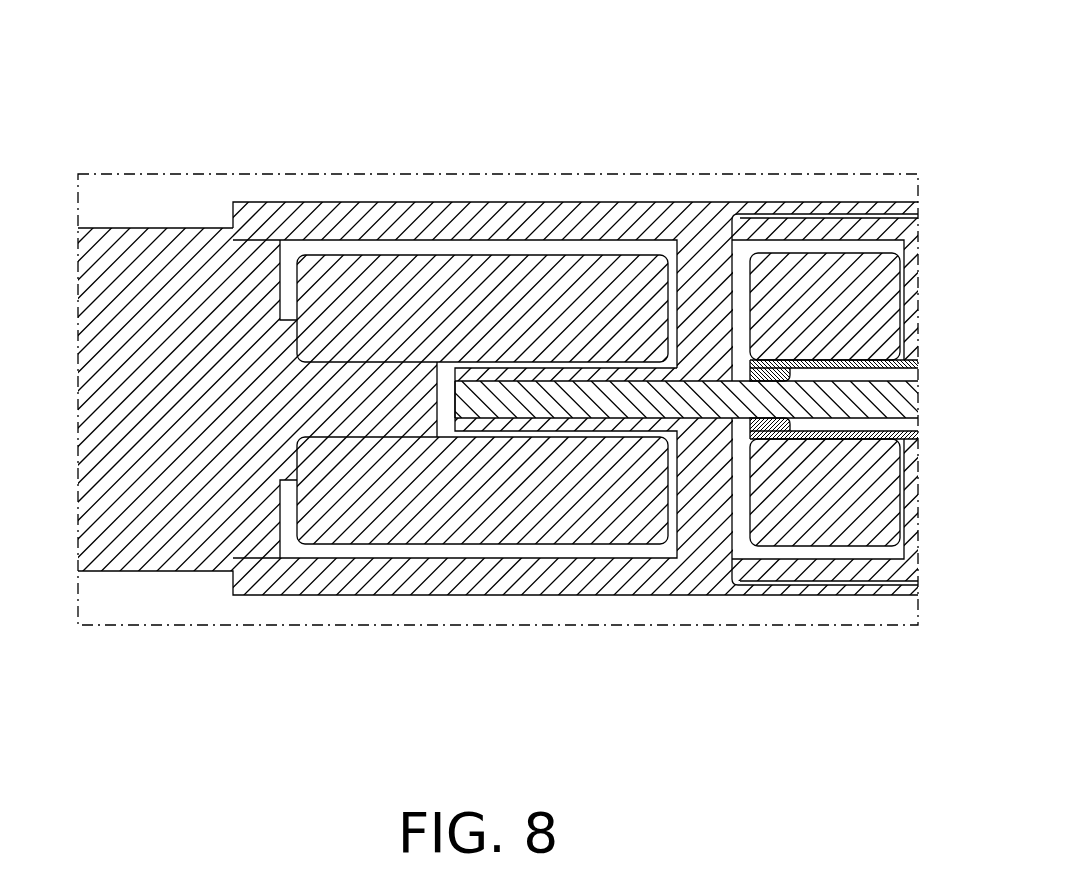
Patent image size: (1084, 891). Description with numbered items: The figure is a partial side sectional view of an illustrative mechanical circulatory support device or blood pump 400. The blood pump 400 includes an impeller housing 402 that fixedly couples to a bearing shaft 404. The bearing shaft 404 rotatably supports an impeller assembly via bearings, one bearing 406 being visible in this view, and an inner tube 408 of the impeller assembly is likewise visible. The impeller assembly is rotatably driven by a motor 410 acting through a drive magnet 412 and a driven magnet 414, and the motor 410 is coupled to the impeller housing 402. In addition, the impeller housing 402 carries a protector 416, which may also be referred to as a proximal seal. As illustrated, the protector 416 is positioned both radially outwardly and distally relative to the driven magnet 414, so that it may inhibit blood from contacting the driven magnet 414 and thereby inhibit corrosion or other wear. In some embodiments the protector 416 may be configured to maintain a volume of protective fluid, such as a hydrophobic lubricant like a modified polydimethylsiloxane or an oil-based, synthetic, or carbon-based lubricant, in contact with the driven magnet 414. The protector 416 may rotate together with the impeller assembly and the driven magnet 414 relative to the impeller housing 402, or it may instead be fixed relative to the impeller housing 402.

The blood pump 400 is at (252, 88).
The impeller housing 402 is at (484, 213).
The bearing shaft 404 is at (568, 384).
The bearing 406 is at (771, 433).
The inner tube 408 is at (846, 440).
The motor 410 is at (122, 278).
The drive magnet 412 is at (360, 278).
The driven magnet 414 is at (825, 270).
The protector 416 is at (878, 235).